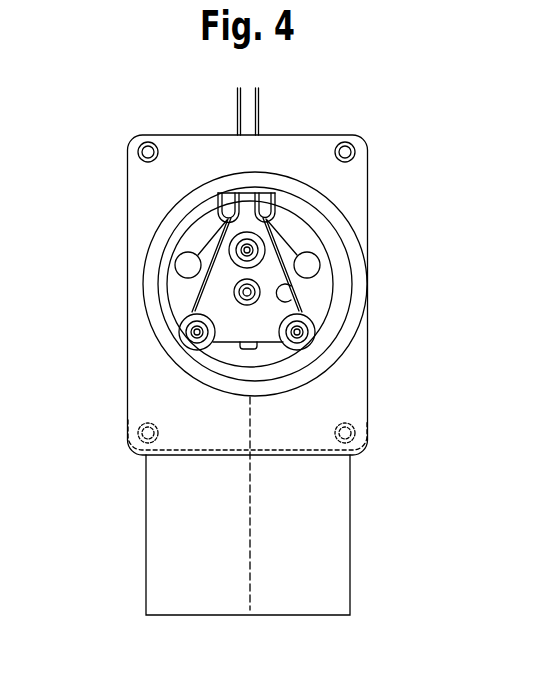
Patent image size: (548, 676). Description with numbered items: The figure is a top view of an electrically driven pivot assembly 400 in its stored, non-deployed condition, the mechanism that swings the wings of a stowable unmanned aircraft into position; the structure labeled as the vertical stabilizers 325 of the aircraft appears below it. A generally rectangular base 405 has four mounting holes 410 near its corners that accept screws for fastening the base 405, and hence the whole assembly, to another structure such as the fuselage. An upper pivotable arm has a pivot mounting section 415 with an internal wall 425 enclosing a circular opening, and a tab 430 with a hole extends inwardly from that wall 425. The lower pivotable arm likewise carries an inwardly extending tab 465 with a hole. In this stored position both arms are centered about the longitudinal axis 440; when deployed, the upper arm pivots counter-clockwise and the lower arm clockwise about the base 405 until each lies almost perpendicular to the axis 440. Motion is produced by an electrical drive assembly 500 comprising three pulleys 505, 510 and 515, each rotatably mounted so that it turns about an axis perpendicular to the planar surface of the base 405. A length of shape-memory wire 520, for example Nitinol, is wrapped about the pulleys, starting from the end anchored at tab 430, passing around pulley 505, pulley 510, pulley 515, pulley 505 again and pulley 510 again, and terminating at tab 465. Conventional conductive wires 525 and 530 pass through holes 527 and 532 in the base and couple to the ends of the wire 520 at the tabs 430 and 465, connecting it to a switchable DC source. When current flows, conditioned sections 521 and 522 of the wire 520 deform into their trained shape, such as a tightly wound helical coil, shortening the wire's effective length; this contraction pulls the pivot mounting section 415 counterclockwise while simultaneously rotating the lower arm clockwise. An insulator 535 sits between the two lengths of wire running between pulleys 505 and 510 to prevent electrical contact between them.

The twin vertical stabilizers 325 is at (350, 540).
The electrically driven pivot assembly 400 is at (371, 181).
The base 405 is at (137, 183).
The mounting holes 410 is at (138, 152).
The pivot mounting section 415 is at (348, 368).
The internal wall 425 is at (178, 328).
The tab 430 is at (224, 194).
The longitudinal axis 440 is at (250, 592).
The tab 465 is at (268, 192).
The electrical drive assembly 500 is at (303, 292).
The pulley 505 is at (195, 308).
The pulley 510 is at (317, 326).
The pulley 515 is at (305, 218).
The wire 520 is at (345, 218).
The section of wire 521 is at (221, 209).
The section of wire 522 is at (298, 297).
The conductive wire 525 is at (237, 94).
The hole 527 is at (176, 262).
The conductive wire 530 is at (261, 106).
The hole 532 is at (319, 259).
The insulator 535 is at (238, 346).